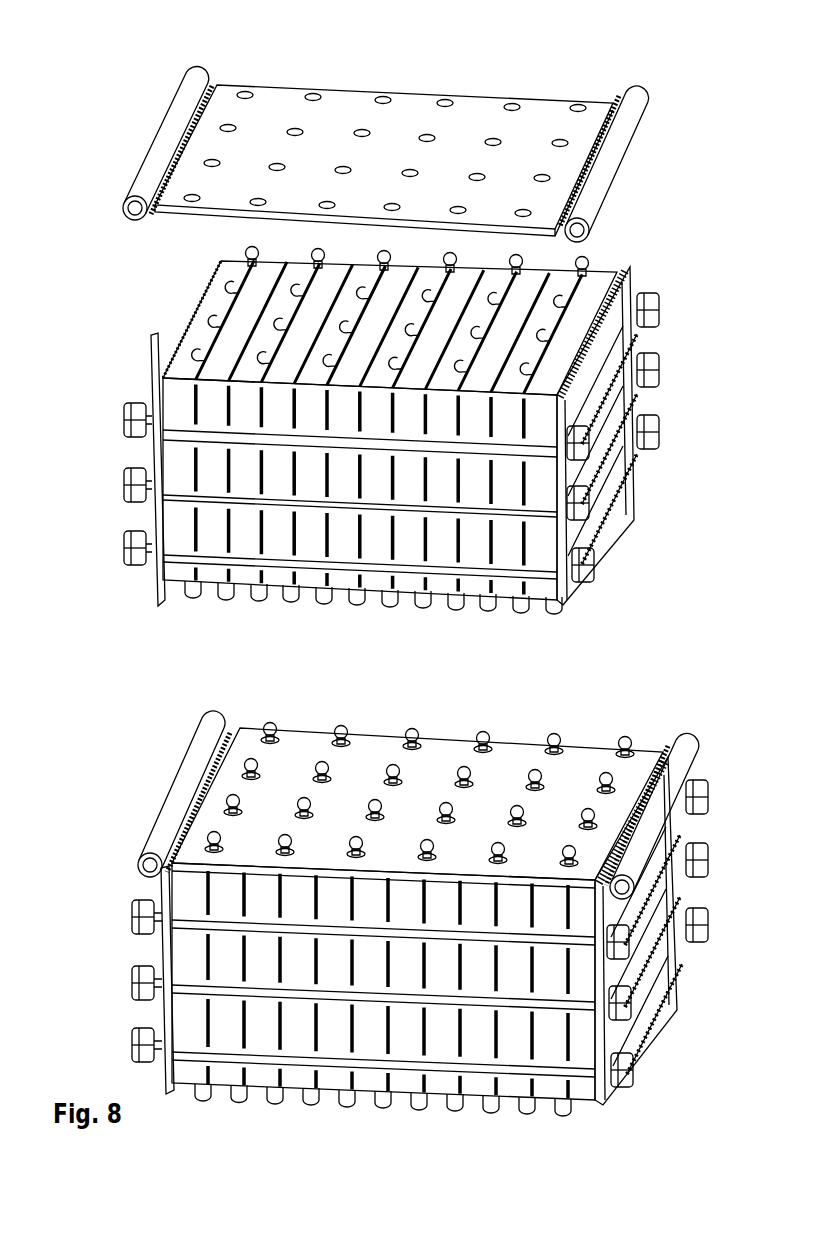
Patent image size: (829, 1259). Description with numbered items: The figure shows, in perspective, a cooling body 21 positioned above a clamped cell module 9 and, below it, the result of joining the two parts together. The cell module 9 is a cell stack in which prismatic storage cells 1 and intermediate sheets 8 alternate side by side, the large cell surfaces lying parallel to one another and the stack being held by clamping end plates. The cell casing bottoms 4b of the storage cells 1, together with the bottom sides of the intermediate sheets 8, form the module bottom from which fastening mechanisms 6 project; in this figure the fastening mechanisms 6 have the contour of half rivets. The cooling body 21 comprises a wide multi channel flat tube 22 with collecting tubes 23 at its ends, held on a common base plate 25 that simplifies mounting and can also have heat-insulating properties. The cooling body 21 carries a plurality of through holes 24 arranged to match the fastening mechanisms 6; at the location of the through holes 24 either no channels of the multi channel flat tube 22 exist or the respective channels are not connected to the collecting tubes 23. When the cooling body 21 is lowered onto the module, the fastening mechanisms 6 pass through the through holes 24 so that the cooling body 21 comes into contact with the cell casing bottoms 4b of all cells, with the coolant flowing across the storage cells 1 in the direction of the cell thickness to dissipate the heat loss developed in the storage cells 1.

The storage cell 1 is at (515, 480).
The cell casing bottom 4b is at (568, 343).
The fastening mechanism 6 is at (198, 353).
The intermediate sheet 8 is at (192, 402).
The cell module 9 is at (118, 338).
The cooling body 21 is at (305, 110).
The multi channel flat tube 22 is at (197, 108).
The collecting tube 23 is at (152, 150).
The through hole 24 is at (577, 110).
The base plate 25 is at (220, 187).